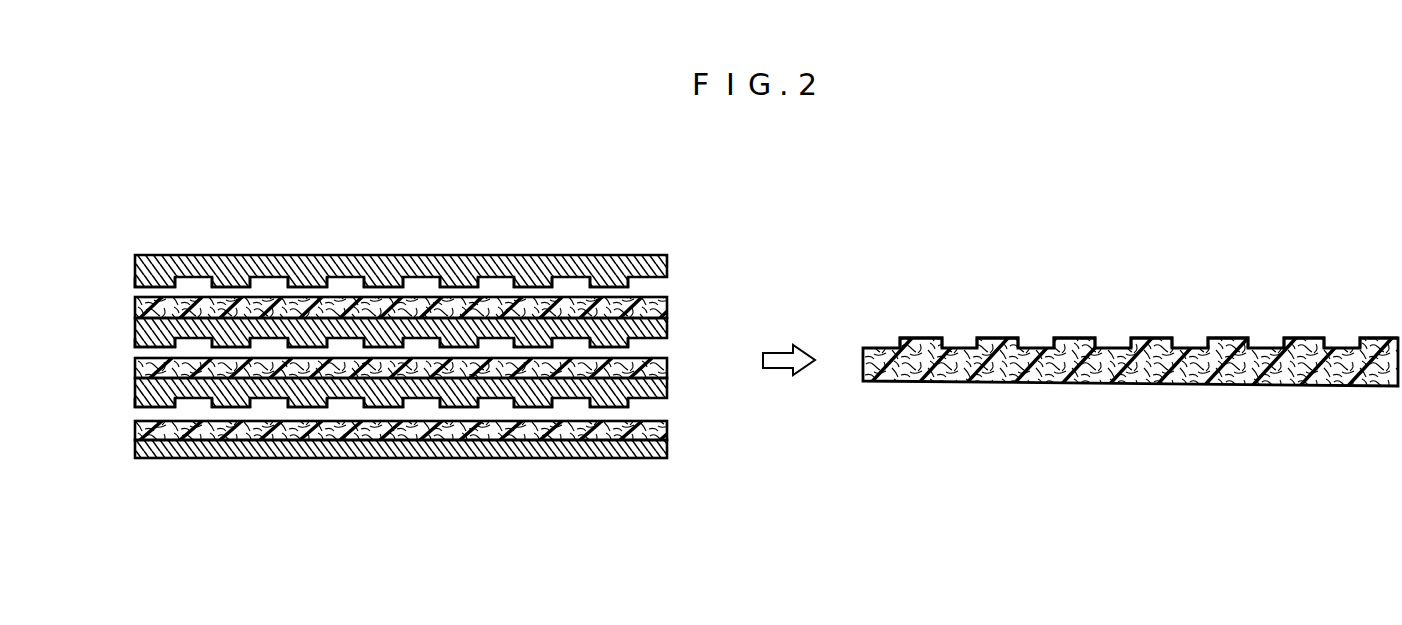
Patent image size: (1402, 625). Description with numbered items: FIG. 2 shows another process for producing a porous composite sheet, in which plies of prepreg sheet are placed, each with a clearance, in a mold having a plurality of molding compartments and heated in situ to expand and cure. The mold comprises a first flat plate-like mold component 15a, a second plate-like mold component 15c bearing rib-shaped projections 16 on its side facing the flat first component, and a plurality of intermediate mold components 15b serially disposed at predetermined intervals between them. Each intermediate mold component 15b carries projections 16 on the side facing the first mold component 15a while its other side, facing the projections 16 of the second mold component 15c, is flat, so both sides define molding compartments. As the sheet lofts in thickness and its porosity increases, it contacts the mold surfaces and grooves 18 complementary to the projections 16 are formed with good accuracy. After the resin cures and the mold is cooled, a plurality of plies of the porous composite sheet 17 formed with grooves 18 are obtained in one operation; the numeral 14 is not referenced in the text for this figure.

The ceramic green sheet 14 is at (667, 307).
The first flat plate-like mold component 15a is at (135, 450).
The intermediate mold component 15b is at (135, 385).
The second plate-like mold component 15c is at (135, 273).
The rib-shaped projections 16 is at (386, 284).
The porous composite sheet 17 is at (1017, 383).
The grooves 18 is at (1112, 342).